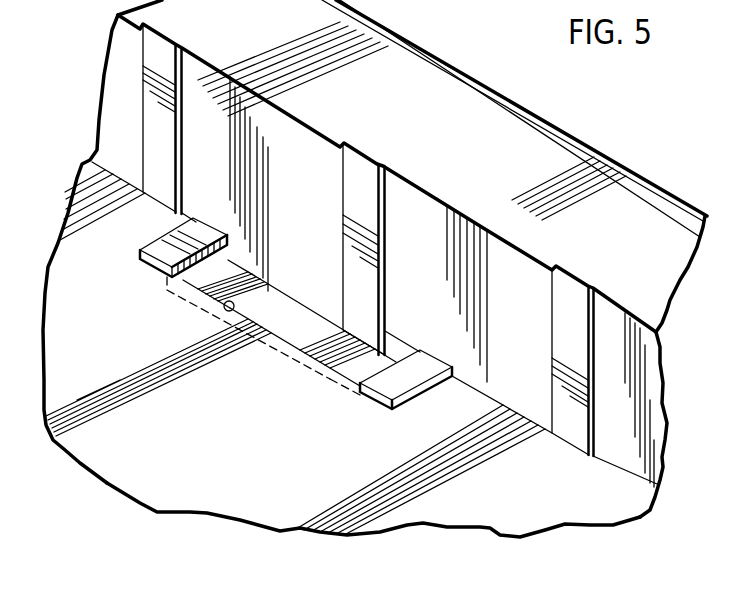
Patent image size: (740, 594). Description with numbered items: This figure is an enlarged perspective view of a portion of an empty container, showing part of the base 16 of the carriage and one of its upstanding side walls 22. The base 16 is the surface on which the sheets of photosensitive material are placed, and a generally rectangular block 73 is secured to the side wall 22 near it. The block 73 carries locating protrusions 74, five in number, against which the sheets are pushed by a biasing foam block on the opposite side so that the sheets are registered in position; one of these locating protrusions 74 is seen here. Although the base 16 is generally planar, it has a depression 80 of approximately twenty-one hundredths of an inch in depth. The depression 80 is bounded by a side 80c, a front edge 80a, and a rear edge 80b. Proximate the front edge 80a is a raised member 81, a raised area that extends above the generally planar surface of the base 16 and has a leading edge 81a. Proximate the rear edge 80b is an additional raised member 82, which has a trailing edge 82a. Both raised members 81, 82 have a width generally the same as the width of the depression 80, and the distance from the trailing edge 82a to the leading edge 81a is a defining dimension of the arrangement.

The base 16 is at (255, 464).
The side wall 22 is at (407, 40).
The rectangular block 73 is at (406, 122).
The locating protrusion 74 is at (373, 226).
The depression 80 is at (303, 333).
The front edge 80a is at (219, 233).
The rear edge 80b is at (361, 399).
The side 80c is at (222, 310).
The raised member 81 is at (157, 256).
The leading edge 81a is at (150, 244).
The additional raised member 82 is at (420, 366).
The trailing edge 82a is at (426, 382).